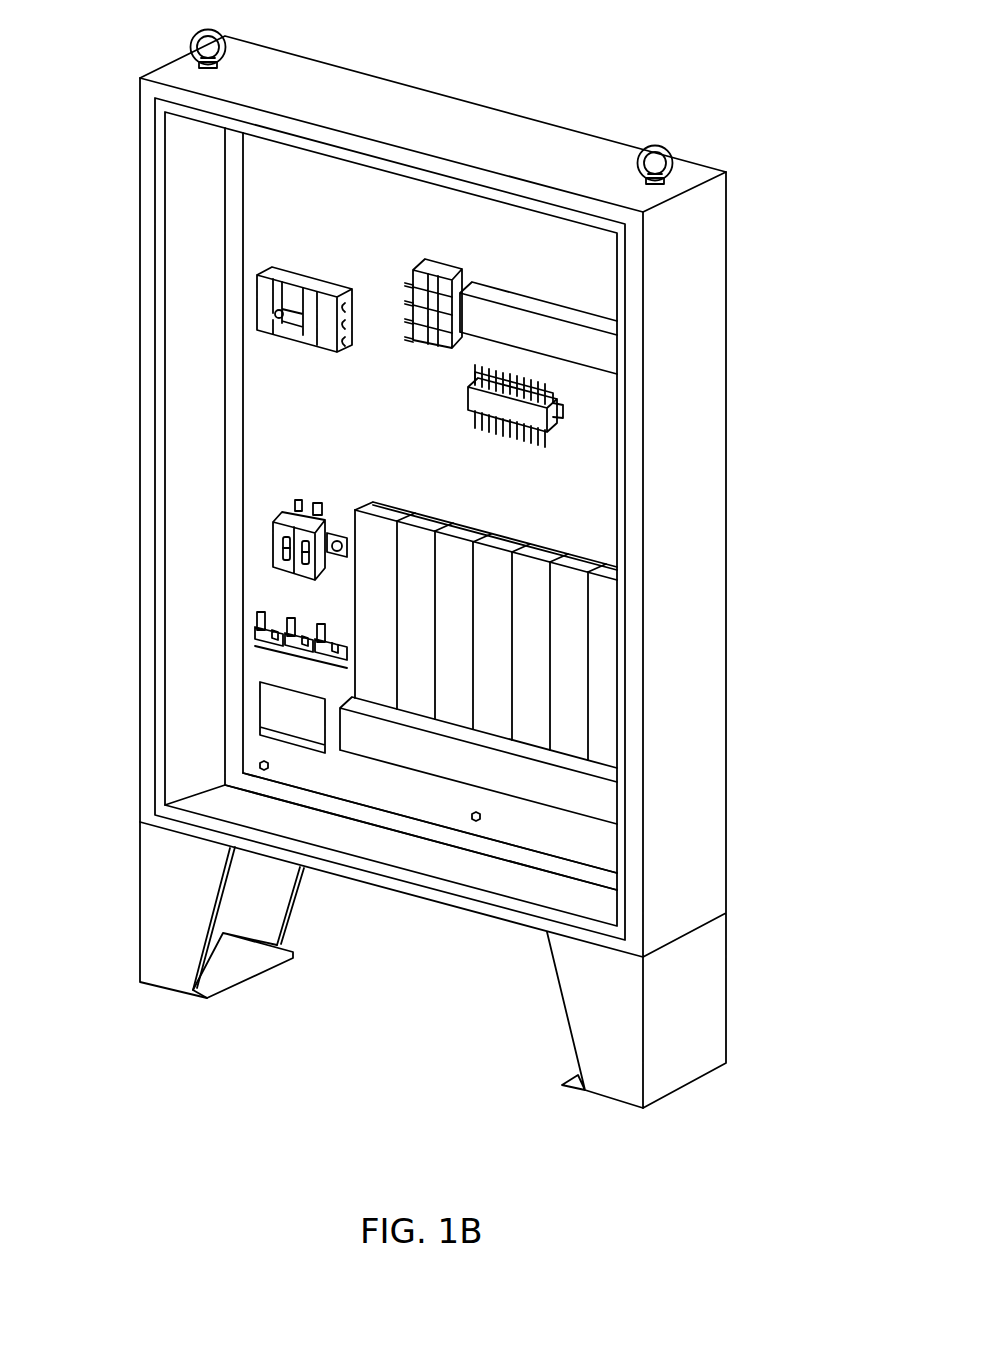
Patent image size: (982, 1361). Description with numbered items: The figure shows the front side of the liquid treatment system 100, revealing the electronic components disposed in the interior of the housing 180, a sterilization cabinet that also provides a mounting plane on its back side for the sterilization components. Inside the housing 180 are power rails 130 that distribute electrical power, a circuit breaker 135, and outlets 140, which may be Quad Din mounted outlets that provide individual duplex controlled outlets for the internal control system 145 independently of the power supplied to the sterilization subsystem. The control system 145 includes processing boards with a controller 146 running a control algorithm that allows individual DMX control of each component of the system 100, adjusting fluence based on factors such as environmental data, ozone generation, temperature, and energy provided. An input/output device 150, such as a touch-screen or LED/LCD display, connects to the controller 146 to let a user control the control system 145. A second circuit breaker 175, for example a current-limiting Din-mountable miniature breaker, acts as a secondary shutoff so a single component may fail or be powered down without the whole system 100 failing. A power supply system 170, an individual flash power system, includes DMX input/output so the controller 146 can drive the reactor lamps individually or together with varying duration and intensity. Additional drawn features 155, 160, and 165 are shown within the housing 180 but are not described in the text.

The liquid treatment system 100 is at (584, 56).
The power rails 130 is at (443, 256).
The circuit breaker 135 is at (283, 270).
The outlets 140 is at (284, 508).
The control system 145 is at (273, 665).
The controller 146 is at (282, 613).
The input/output device 150 is at (293, 742).
The fastener 155 is at (472, 823).
The back mounting panel 160 is at (563, 825).
The lower wire duct 165 is at (375, 762).
The power supply system 170 is at (568, 647).
The circuit breaker 175 is at (550, 387).
The housing 180 is at (726, 248).